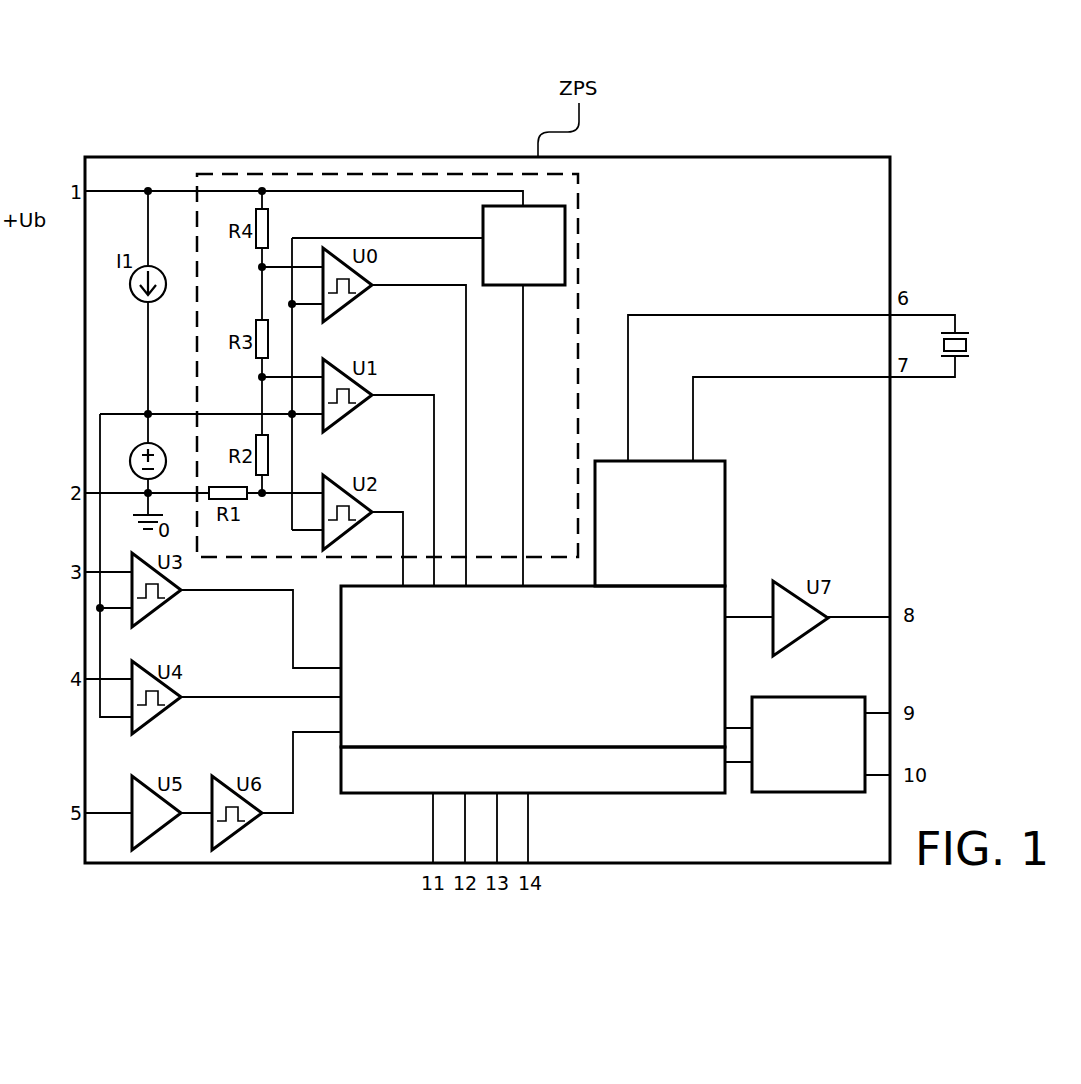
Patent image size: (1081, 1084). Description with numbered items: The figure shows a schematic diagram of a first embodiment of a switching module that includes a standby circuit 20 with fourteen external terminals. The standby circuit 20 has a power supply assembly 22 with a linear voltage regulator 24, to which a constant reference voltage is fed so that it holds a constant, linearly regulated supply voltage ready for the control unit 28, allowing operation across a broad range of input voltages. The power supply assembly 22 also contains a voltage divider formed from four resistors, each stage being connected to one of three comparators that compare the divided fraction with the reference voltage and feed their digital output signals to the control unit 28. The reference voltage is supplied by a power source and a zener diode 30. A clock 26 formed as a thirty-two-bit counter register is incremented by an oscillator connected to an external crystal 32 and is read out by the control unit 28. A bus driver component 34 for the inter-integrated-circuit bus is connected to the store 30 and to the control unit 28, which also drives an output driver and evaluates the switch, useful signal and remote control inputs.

The standby circuit 20 is at (944, 473).
The power supply assembly 22 is at (580, 278).
The linear voltage regulator 24 is at (524, 245).
The clock 26 is at (660, 523).
The control unit 28 is at (533, 666).
The store 30 is at (159, 446).
The external crystal 32 is at (969, 345).
The bus driver component 34 is at (808, 744).